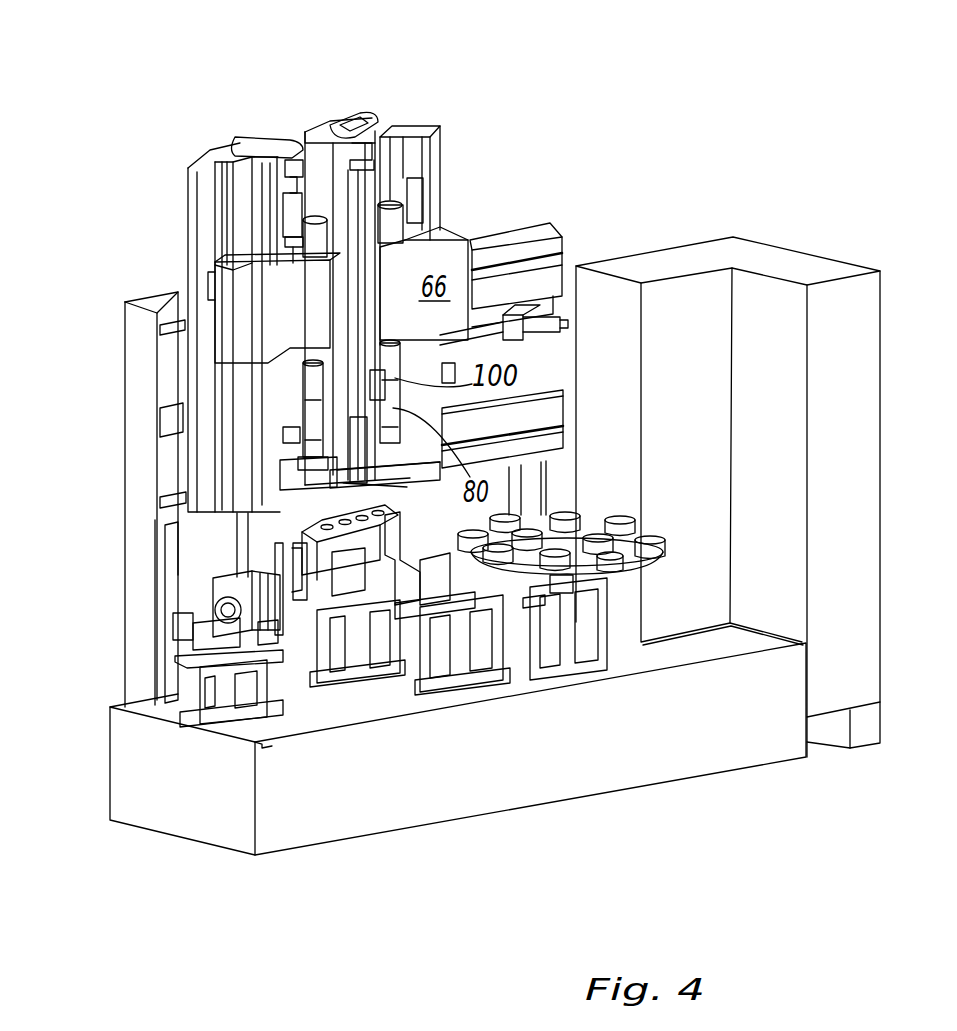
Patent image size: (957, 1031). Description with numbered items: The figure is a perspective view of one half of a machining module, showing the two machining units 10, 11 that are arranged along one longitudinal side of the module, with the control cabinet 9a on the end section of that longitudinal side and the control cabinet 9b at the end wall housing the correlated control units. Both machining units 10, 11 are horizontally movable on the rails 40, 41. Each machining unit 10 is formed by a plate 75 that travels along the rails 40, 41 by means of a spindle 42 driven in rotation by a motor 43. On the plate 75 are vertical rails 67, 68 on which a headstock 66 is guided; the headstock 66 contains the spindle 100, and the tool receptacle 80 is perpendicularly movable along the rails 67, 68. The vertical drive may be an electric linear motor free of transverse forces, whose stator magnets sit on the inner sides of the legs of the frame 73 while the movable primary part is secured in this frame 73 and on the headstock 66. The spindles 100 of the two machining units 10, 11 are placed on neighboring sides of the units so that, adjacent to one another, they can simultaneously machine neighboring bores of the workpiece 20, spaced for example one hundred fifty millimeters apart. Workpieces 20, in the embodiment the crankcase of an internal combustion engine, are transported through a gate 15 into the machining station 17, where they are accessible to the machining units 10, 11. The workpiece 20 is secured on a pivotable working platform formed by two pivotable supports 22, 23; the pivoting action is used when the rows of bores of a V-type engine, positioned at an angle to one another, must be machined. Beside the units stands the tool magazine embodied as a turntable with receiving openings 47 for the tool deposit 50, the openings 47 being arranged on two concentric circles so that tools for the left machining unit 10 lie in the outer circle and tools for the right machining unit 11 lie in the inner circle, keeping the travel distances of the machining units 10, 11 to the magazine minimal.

The machining unit 10 is at (253, 130).
The machining unit 11 is at (386, 122).
The plate 75 is at (188, 202).
The frame 73 is at (243, 268).
The headstock 66 is at (275, 310).
The vertical rail 67 is at (370, 392).
The rail 40 is at (490, 272).
The spindle 42 is at (487, 330).
The motor 43 is at (543, 327).
The control cabinet 9a is at (685, 297).
The control cabinet 9b is at (770, 290).
The spindle 100 is at (313, 382).
The vertical rail 68 is at (300, 420).
The tool receptacle 80 is at (305, 440).
The rail 41 is at (563, 402).
The receiving opening 47 is at (597, 512).
The tool deposit 50 is at (662, 543).
The gate 15 is at (263, 532).
The workpiece 20 is at (317, 620).
The pivotable support 22 is at (342, 552).
The pivotable support 23 is at (418, 606).
The machining station 17 is at (462, 893).